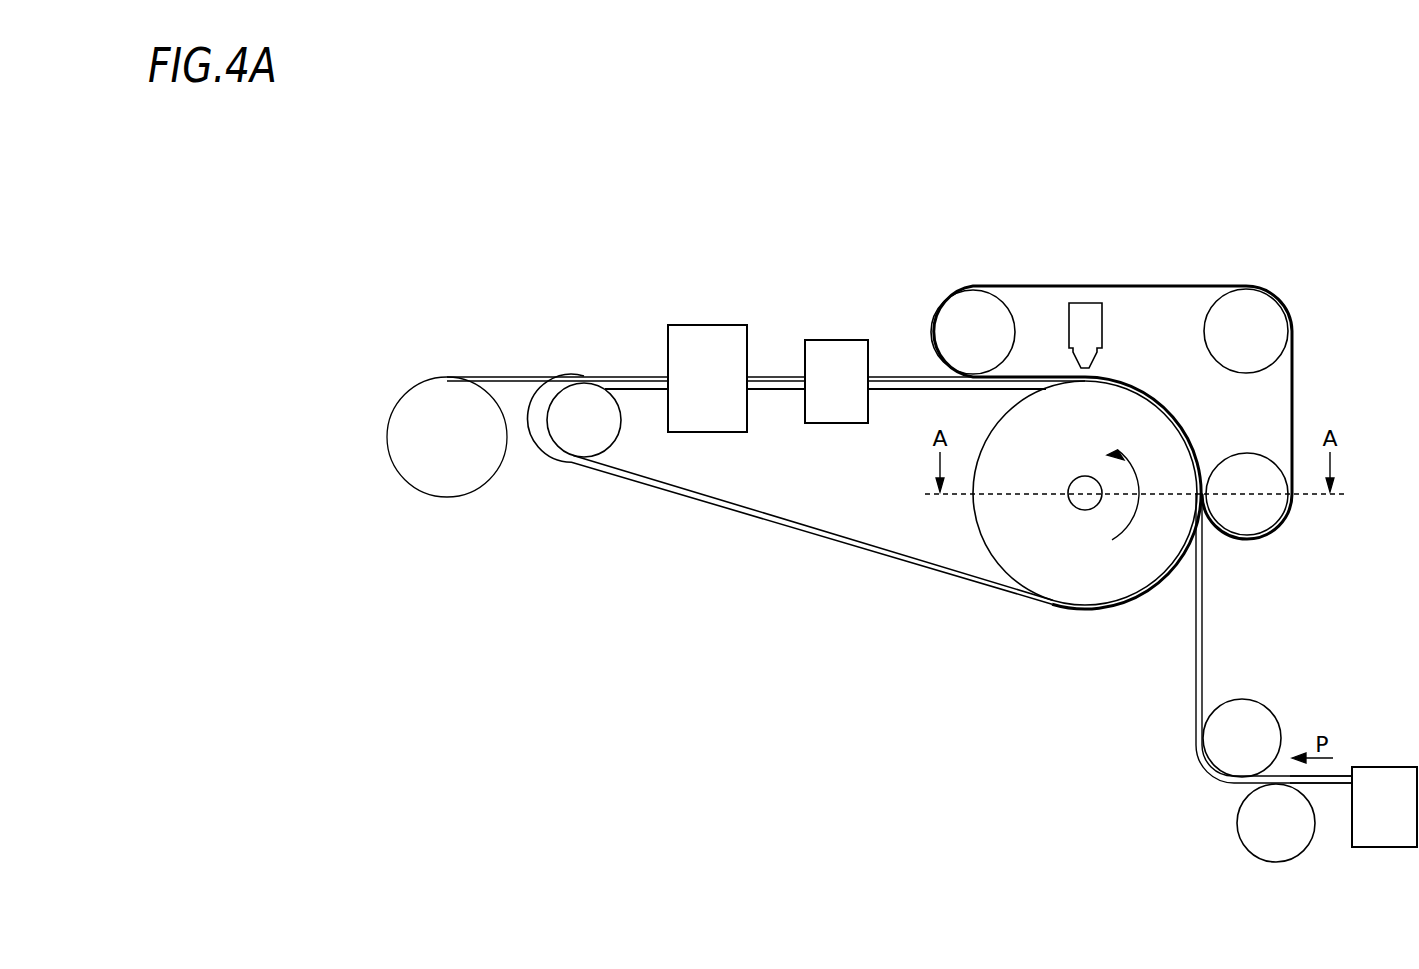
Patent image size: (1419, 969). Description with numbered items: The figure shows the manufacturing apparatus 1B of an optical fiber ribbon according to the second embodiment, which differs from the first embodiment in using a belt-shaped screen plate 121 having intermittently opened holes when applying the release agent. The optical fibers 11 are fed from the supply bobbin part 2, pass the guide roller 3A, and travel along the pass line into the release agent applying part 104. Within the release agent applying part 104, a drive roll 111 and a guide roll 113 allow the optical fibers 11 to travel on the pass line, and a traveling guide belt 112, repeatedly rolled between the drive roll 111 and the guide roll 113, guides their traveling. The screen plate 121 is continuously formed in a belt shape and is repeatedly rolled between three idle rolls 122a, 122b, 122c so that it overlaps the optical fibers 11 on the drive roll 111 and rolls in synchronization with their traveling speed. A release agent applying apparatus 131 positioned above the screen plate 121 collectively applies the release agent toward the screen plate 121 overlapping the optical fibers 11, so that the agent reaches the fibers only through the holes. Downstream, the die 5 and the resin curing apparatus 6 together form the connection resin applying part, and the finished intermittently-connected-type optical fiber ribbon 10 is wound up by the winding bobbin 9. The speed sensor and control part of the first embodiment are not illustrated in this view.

The manufacturing apparatus 1B is at (932, 202).
The supply bobbin part 2 is at (1393, 773).
The guide roller 3A is at (1233, 755).
The die 5 is at (830, 340).
The resin curing apparatus 6 is at (712, 325).
The winding bobbin 9 is at (438, 397).
The intermittently-connected-type optical fiber ribbon 10 is at (517, 377).
The optical fiber 11 is at (1327, 786).
The release agent applying part 104 is at (1160, 373).
The drive roll 111 is at (1055, 578).
The traveling guide belt 112 is at (903, 377).
The guide roll 113 is at (579, 442).
The screen plate 121 is at (1293, 385).
The idle roll 122a is at (1257, 523).
The idle roll 122b is at (1268, 310).
The idle roll 122c is at (986, 305).
The release agent applying apparatus 131 is at (1080, 317).